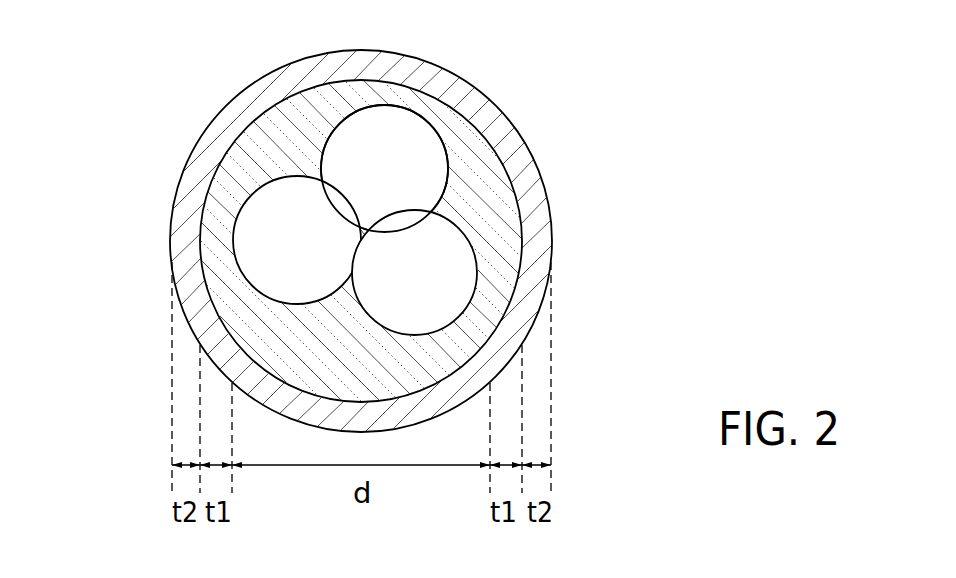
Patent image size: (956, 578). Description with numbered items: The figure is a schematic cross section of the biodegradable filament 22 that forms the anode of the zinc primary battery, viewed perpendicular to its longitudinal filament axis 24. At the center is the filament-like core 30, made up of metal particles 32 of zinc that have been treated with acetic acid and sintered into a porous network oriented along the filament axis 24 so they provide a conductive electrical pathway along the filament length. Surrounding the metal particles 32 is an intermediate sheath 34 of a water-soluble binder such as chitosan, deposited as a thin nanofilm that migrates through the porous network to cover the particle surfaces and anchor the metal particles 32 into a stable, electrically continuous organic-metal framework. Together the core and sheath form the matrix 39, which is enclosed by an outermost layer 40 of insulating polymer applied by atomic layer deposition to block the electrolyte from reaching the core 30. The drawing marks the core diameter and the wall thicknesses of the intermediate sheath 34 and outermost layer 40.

The biodegradable filament 22 is at (165, 106).
The longitudinal filament axis 24 is at (357, 247).
The center filament-like core 30 is at (453, 207).
The metal particles 32 is at (298, 176).
The intermediate sheath 34 is at (508, 222).
The matrix 39 is at (452, 322).
The outermost layer 40 is at (531, 272).